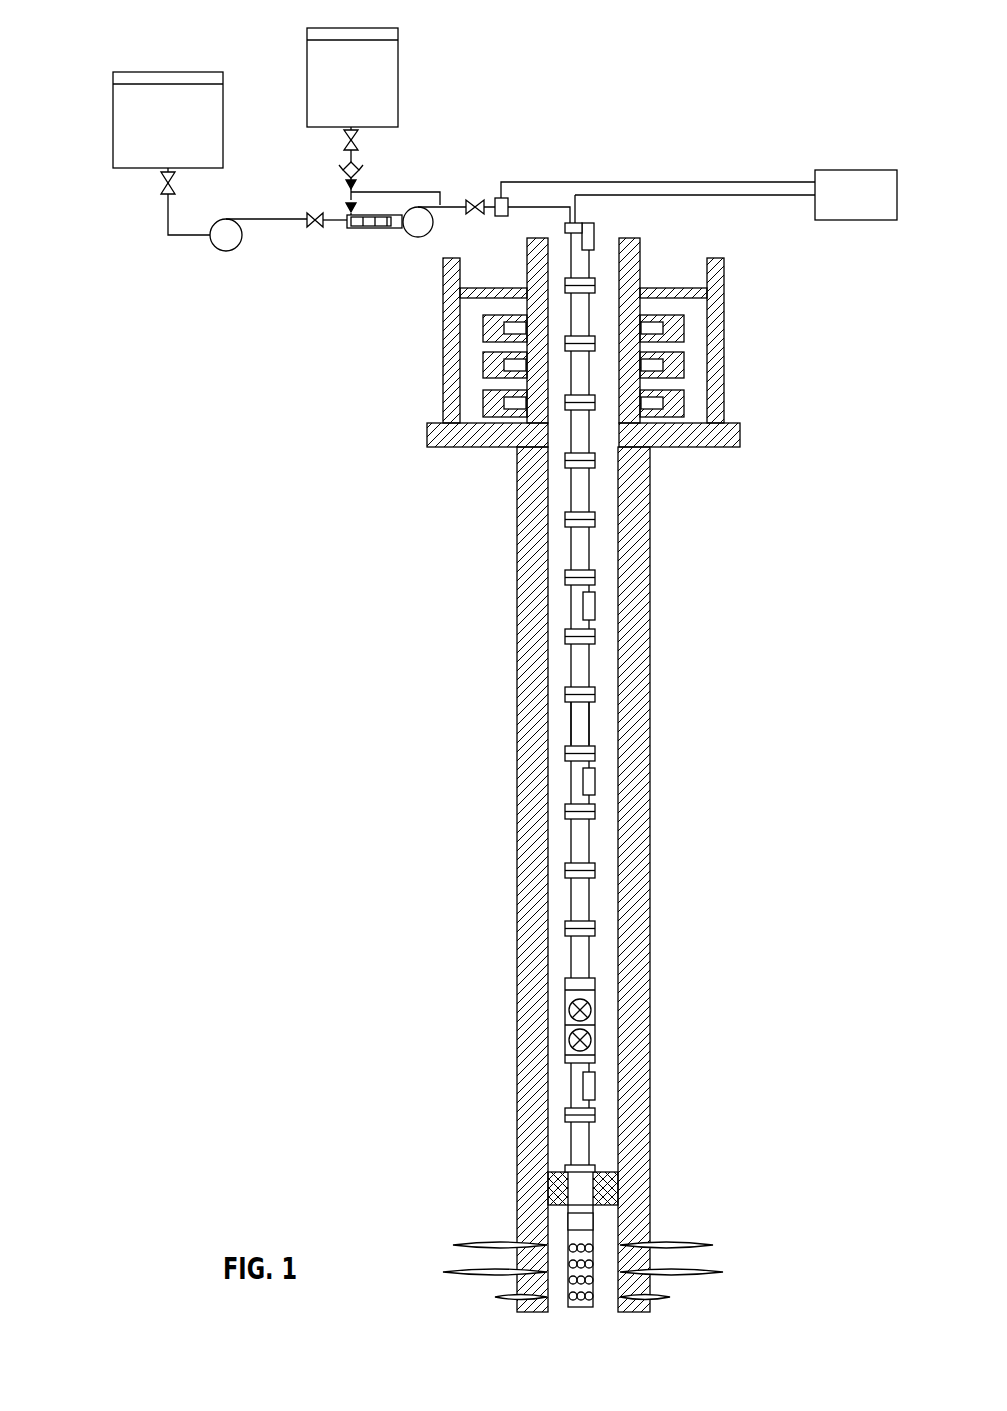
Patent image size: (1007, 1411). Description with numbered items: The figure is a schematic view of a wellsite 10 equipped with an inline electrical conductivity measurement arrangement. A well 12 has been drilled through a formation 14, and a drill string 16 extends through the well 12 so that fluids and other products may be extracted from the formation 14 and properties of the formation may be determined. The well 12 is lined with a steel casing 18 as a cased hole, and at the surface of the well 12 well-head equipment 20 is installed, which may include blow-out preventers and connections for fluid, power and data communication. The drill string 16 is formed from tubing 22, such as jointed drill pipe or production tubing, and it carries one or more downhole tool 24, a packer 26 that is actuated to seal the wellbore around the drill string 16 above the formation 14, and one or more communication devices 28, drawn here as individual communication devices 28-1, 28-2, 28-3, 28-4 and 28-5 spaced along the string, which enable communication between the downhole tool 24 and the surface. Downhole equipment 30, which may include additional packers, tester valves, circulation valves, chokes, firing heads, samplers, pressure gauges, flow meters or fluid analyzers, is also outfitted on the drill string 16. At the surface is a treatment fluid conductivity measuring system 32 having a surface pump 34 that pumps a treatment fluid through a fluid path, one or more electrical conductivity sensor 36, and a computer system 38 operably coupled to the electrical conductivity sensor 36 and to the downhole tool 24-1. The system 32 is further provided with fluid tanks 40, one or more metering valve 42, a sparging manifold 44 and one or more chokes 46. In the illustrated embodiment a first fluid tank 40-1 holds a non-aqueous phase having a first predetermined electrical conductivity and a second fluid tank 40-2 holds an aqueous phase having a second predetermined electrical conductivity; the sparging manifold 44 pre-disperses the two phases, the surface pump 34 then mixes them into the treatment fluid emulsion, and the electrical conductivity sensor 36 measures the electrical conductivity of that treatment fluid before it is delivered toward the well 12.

The wellsite 10 is at (668, 152).
The well 12 is at (662, 900).
The formation 14 is at (682, 1275).
The drill string 16 is at (570, 902).
The steel casing 18 is at (517, 497).
The well-head equipment 20 is at (443, 410).
The tubing 22 is at (596, 717).
The downhole tool 24 is at (686, 1082).
The downhole tool 24-1 is at (565, 1226).
The packer 26 is at (615, 1190).
The communication devices 28 is at (580, 1086).
The sensor 28-1 is at (593, 1227).
The sensor 28-2 is at (596, 1087).
The sensor 28-3 is at (596, 782).
The sensor 28-4 is at (596, 605).
The sensor 28-5 is at (595, 240).
The downhole equipment 30 is at (596, 1010).
The treatment fluid conductivity measuring system 32 is at (228, 35).
The surface pump 34 is at (418, 237).
The electrical conductivity sensor 36 is at (500, 198).
The computer system 38 is at (858, 170).
The fluid tanks 40 is at (113, 116).
The first fluid tank 40-1 is at (350, 28).
The second fluid tank 40-2 is at (142, 170).
The metering valve 42 is at (316, 213).
The sparging manifold 44 is at (356, 229).
The chokes 46 is at (375, 190).